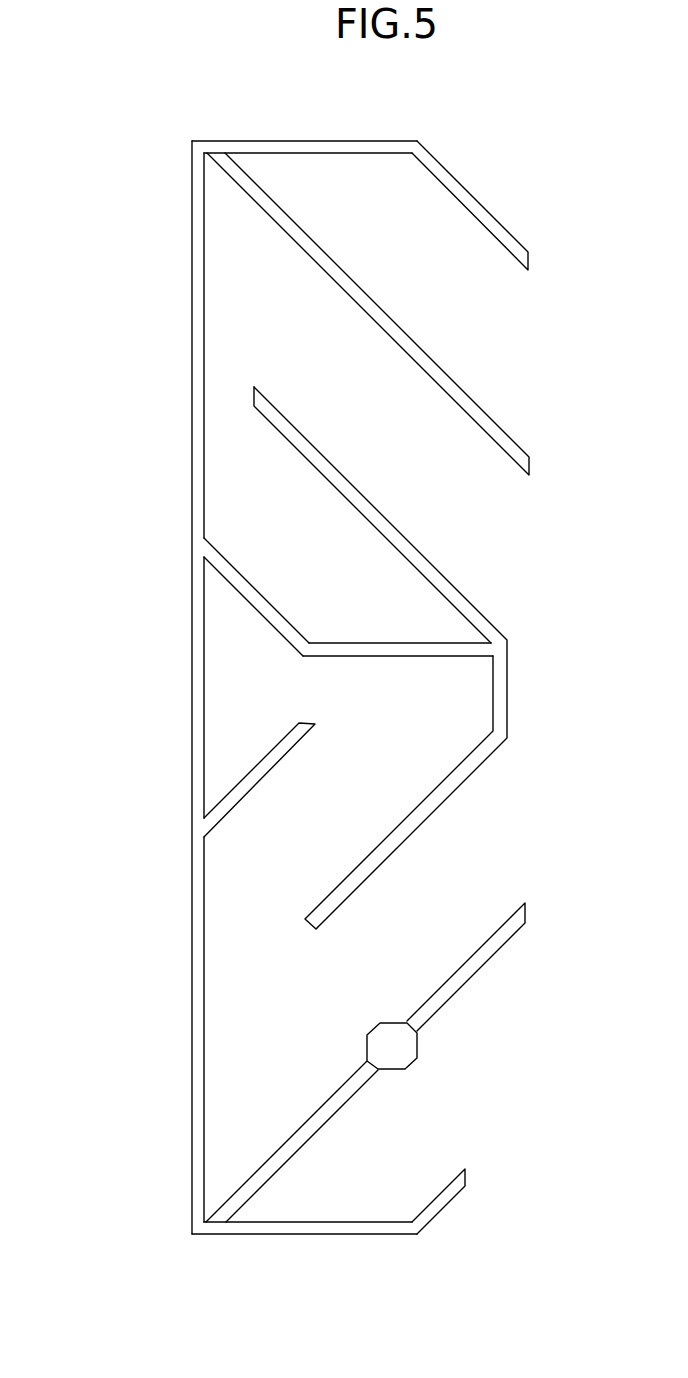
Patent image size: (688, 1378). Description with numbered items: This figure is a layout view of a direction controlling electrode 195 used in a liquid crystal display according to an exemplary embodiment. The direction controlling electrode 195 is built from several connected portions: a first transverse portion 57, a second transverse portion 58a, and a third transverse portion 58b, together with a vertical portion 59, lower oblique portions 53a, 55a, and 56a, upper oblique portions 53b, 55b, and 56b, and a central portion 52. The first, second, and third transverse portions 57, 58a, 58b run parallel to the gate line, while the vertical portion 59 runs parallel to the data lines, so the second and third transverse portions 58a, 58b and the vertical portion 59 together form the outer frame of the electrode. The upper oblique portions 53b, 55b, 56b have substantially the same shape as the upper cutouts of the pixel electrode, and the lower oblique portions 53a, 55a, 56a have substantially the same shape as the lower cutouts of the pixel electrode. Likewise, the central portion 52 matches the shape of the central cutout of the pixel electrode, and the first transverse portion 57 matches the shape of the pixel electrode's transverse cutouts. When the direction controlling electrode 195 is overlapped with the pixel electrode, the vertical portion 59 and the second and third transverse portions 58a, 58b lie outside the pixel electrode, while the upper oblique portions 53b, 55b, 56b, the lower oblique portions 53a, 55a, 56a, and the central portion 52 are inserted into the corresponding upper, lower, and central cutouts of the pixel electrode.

The direction controlling electrode 195 is at (129, 250).
The vertical portion 59 is at (204, 454).
The third transverse portion 58b is at (312, 155).
The upper oblique portion 53b is at (472, 217).
The upper oblique portion 55b is at (432, 383).
The central portion 52 is at (424, 578).
The first transverse portion 57 is at (415, 643).
The upper oblique portion 56b is at (257, 608).
The lower oblique portion 56a is at (257, 767).
The second transverse portion 58a is at (321, 1222).
The lower oblique portion 53a is at (438, 1197).
The lower oblique portion 55a is at (460, 970).